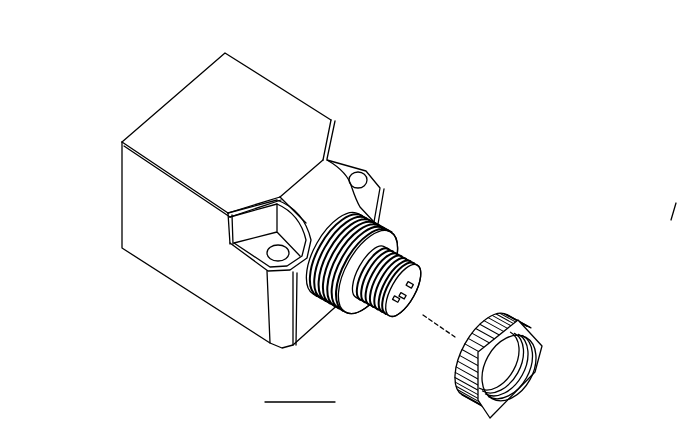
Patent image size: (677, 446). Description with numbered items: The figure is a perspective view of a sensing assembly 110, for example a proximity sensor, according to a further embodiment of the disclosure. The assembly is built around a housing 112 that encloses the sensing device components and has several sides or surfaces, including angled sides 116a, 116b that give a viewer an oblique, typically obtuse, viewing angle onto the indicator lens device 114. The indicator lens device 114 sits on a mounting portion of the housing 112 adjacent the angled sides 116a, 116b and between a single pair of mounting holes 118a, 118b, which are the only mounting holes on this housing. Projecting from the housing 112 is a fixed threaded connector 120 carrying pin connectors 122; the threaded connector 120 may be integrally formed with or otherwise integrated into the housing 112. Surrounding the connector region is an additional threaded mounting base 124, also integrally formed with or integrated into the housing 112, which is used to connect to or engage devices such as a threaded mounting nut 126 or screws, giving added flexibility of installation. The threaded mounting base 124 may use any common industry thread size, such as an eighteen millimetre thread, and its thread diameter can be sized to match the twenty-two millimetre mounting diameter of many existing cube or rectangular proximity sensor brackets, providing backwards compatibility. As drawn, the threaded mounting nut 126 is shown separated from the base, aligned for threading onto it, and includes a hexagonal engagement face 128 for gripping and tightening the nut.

The sensing assembly 110 is at (147, 100).
The housing 112 is at (288, 93).
The indicator lens device 114 is at (346, 160).
The angled side 116a is at (248, 231).
The angled side 116b is at (326, 178).
The mounting hole 118a is at (267, 270).
The mounting hole 118b is at (365, 172).
The threaded connector 120 is at (405, 266).
The pin connectors 122 is at (421, 288).
The threaded mounting base 124 is at (396, 233).
The threaded mounting nut 126 is at (520, 323).
The hexagonal engagement face 128 is at (497, 410).